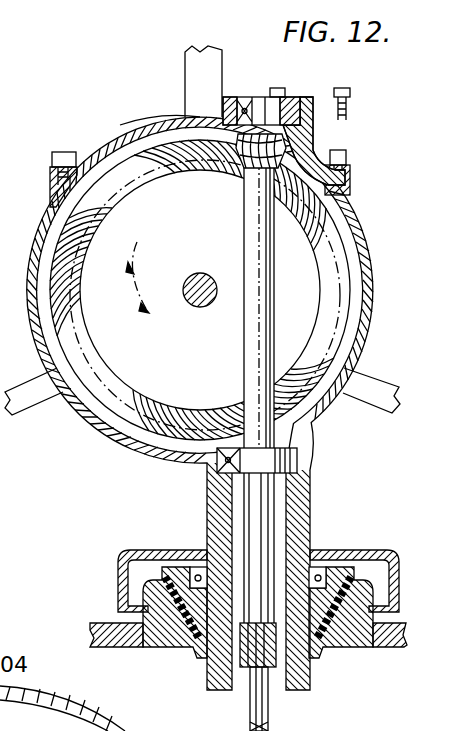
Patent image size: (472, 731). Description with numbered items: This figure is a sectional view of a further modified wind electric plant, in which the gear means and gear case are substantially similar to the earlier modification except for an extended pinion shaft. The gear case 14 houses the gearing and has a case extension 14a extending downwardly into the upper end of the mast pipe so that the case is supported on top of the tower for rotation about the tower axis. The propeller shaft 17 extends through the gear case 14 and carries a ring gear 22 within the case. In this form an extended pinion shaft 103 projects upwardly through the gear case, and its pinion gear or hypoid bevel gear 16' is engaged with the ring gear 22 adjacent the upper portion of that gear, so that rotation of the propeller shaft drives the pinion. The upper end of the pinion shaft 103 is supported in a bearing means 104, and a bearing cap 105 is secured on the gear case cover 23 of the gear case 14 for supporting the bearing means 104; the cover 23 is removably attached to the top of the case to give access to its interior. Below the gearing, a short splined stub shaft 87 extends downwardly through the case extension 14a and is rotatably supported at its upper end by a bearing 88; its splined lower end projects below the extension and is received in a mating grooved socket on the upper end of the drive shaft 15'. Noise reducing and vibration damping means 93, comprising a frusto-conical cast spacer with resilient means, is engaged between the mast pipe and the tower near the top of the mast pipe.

The gear case 14 is at (365, 233).
The case extension 14a is at (207, 510).
The drive shaft 15' is at (296, 699).
The pinion gear or hypoid bevel gear 16' is at (300, 144).
The propeller shaft 17 is at (197, 309).
The ring gear 22 is at (50, 218).
The gear case cover 23 is at (140, 124).
The stub shaft 87 is at (270, 525).
The bearing 88 is at (300, 463).
The noise reducing and vibration damping means 93 is at (188, 674).
The extended pinion shaft 103 is at (240, 237).
The bearing means 104 is at (264, 108).
The bearing cap 105 is at (303, 97).